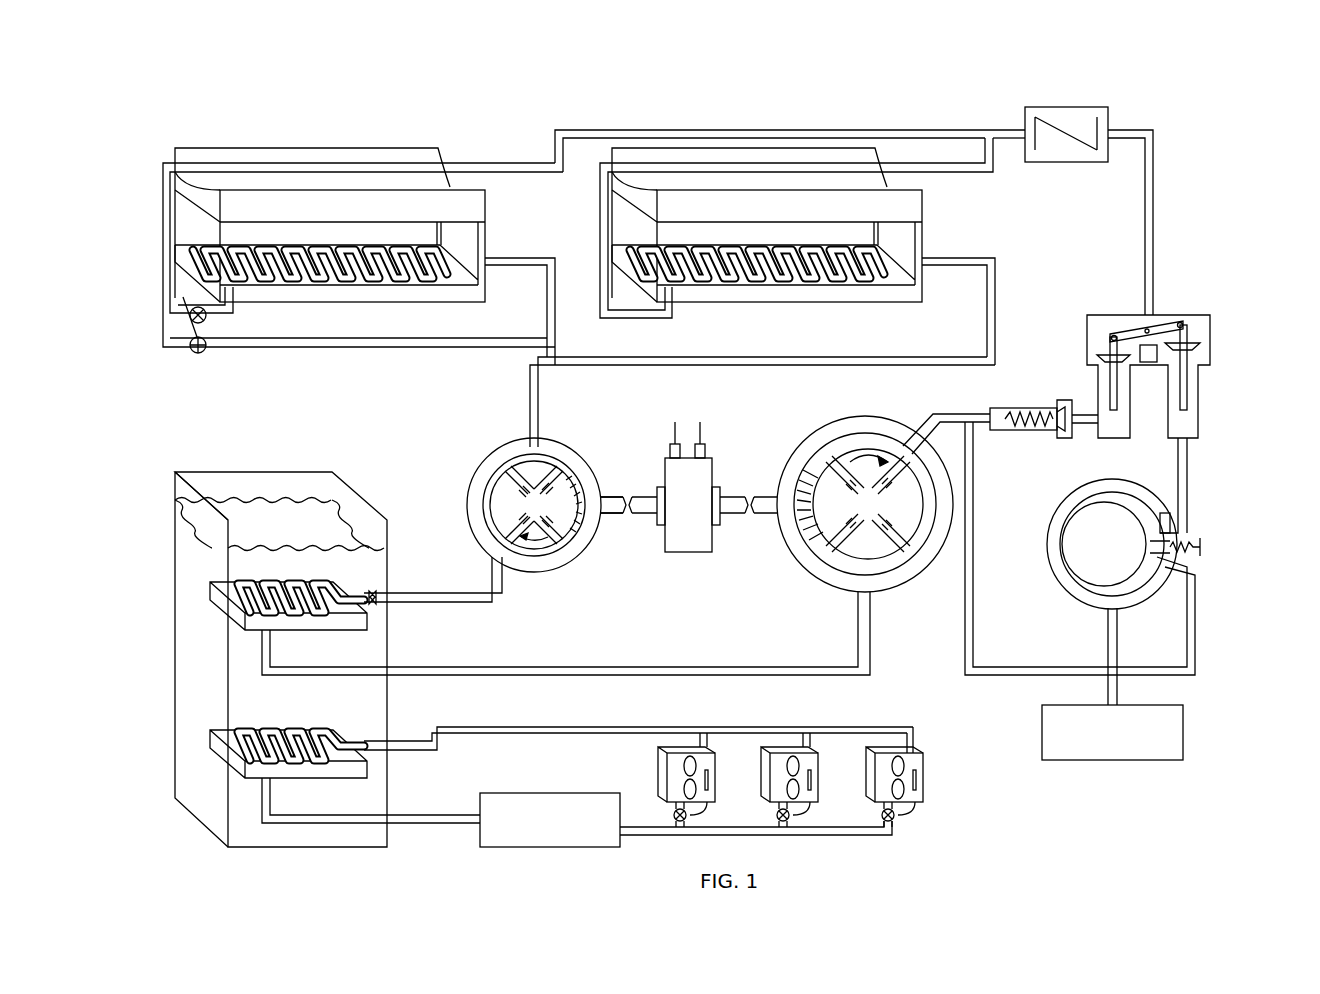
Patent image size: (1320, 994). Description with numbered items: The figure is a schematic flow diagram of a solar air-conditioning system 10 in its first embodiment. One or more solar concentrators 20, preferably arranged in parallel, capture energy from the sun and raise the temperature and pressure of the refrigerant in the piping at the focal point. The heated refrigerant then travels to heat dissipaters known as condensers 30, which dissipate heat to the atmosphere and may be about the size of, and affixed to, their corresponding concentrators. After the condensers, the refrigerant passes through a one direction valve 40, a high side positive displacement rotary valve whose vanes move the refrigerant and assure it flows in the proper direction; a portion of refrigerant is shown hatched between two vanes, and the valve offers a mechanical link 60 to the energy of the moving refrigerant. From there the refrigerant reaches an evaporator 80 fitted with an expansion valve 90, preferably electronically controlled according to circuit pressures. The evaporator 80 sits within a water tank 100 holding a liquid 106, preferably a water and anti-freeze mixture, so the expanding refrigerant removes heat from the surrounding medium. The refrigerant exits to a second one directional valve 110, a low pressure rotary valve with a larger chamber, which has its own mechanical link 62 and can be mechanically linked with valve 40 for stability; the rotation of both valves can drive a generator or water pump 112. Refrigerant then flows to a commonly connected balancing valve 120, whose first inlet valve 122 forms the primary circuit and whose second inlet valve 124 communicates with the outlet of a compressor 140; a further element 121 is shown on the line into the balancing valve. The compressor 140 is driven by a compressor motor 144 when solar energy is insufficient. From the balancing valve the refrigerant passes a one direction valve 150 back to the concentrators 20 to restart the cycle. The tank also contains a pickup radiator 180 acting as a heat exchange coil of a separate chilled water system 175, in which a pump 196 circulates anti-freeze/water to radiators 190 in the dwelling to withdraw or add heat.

The solar air-conditioning system 10 is at (690, 112).
The solar concentrator 20 is at (352, 216).
The condenser 30 is at (375, 300).
The one direction valve 40 is at (488, 444).
The mechanical link 60 is at (625, 478).
The mechanical link 62 is at (750, 482).
The evaporator 80 is at (220, 602).
The expansion valve 90 is at (375, 603).
The water tank 100 is at (390, 570).
The liquid 106 is at (285, 498).
The second one directional valve 110 is at (931, 590).
The generator or water pump 112 is at (708, 555).
The balancing valve 120 is at (1172, 312).
The spring-loaded valve 121 is at (1035, 432).
The first inlet valve 122 is at (1098, 382).
The second inlet valve 124 is at (1200, 416).
The compressor 140 is at (1056, 590).
The compressor motor 144 is at (1160, 762).
The one direction valve 150 is at (1110, 113).
The chilled water system 175 is at (446, 840).
The pickup radiator 180 is at (300, 730).
The radiator 190 is at (665, 756).
The pump 196 is at (598, 848).